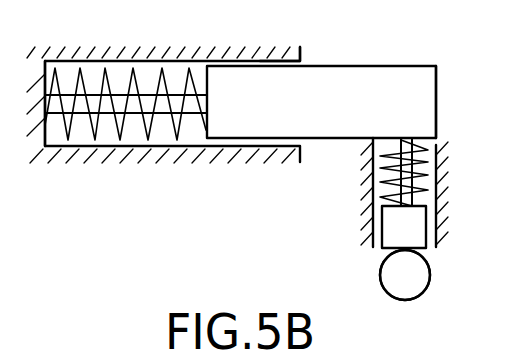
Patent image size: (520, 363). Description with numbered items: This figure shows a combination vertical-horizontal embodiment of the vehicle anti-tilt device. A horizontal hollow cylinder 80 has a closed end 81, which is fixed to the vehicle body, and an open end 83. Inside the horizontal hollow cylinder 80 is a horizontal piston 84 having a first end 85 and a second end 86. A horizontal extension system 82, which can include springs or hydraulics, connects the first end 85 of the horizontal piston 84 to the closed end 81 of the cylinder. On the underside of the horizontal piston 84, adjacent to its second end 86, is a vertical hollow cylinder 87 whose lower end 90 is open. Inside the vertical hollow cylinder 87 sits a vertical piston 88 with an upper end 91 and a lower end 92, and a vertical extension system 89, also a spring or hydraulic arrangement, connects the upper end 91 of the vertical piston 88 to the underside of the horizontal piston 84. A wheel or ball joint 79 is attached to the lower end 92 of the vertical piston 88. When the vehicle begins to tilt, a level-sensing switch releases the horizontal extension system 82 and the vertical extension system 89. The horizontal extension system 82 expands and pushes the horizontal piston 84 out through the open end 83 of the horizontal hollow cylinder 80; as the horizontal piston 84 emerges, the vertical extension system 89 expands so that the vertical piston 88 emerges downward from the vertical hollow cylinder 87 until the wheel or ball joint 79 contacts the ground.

The wheel or ball joint 79 is at (407, 290).
The horizontal hollow cylinder 80 is at (135, 60).
The closed end 81 is at (43, 87).
The horizontal extension system 82 is at (80, 83).
The open end 83 is at (302, 62).
The horizontal piston 84 is at (387, 67).
The first end 85 is at (199, 117).
The second end 86 is at (437, 100).
The vertical hollow cylinder 87 is at (438, 150).
The vertical piston 88 is at (402, 230).
The vertical extension system 89 is at (427, 170).
The lower end 90 is at (375, 248).
The upper end 91 is at (418, 200).
The lower end 92 is at (425, 250).